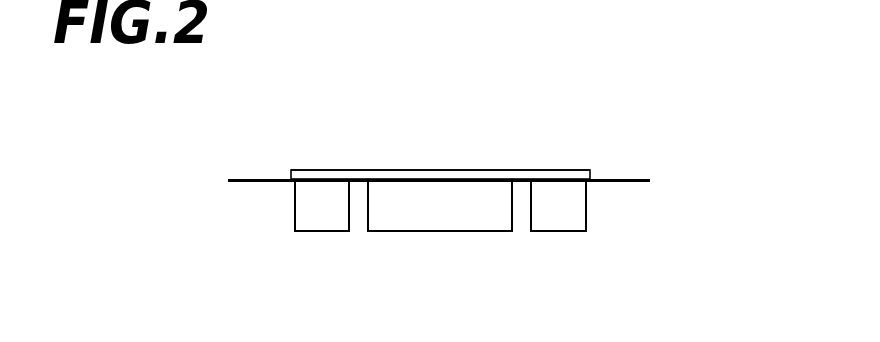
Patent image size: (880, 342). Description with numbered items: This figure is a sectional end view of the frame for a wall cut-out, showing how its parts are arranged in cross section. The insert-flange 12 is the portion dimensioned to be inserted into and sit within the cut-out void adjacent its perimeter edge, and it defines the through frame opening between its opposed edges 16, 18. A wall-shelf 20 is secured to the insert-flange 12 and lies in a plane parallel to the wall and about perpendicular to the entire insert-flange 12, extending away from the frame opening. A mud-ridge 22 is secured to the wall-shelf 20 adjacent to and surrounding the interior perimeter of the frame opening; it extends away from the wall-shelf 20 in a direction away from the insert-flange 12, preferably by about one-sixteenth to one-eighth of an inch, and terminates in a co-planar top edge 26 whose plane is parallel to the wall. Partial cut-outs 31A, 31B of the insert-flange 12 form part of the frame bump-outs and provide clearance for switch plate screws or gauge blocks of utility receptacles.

The insert-flange 12 is at (570, 214).
The opposed edge of the insert-flange 16 is at (293, 215).
The opposed edge of the insert-flange 18 is at (588, 197).
The wall-shelf 20 is at (620, 181).
The mud-ridge 22 is at (291, 176).
The co-planar top edge 26 is at (495, 170).
The partial cut-out 31A is at (357, 244).
The partial cut-out 31B is at (520, 244).